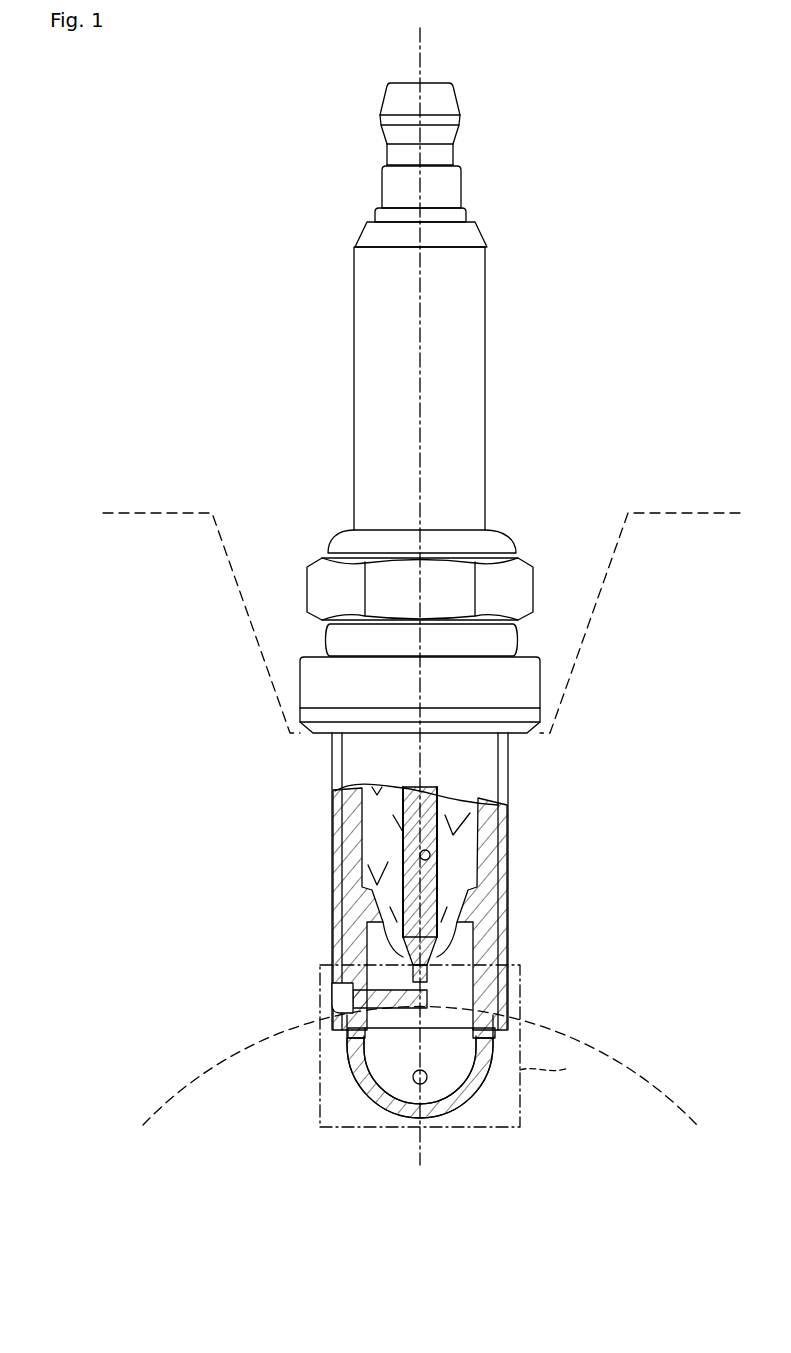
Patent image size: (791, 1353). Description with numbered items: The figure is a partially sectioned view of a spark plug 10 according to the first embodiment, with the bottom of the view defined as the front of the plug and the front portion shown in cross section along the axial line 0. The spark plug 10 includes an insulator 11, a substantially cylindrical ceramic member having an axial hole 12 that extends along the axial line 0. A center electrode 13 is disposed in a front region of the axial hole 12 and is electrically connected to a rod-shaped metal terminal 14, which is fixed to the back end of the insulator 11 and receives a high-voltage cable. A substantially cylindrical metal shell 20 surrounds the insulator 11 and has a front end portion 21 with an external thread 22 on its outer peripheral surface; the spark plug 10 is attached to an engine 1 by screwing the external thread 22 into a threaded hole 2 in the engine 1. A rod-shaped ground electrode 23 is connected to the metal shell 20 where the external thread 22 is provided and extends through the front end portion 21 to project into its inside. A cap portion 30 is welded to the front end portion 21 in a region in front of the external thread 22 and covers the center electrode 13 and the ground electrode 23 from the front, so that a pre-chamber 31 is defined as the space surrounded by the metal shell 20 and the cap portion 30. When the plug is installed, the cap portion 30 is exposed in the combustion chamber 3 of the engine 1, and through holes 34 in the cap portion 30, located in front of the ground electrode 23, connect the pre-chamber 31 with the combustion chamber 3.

The axial line 0 is at (420, 38).
The engine 1 is at (684, 513).
The threaded hole 2 is at (505, 778).
The combustion chamber 3 is at (595, 1103).
The spark plug 10 is at (572, 167).
The insulator 11 is at (372, 335).
The axial hole 12 is at (440, 843).
The center electrode 13 is at (427, 950).
The metal terminal 14 is at (378, 129).
The metal shell 20 is at (308, 532).
The front end portion 21 is at (350, 897).
The external thread 22 is at (338, 763).
The ground electrode 23 is at (397, 1008).
The cap portion 30 is at (350, 1063).
The pre-chamber 31 is at (452, 1048).
The through holes 34 is at (372, 1083).